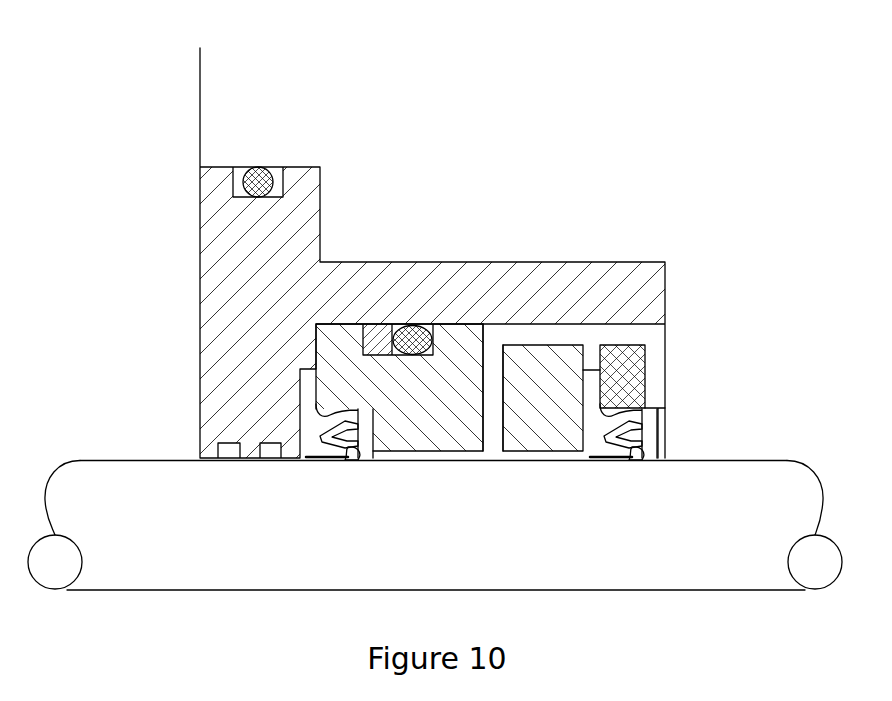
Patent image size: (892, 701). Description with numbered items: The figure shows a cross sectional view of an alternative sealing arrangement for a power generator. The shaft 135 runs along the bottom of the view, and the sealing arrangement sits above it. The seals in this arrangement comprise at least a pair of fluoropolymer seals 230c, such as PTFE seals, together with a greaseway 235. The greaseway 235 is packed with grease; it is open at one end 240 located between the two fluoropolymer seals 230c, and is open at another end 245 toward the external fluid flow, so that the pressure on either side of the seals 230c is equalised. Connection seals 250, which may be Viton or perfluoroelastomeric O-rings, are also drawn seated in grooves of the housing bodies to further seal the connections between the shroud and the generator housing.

The shaft 135 is at (148, 459).
The fluoropolymer seals 230c is at (310, 440).
The greaseway 235 is at (492, 442).
The end 240 is at (490, 440).
The another end 245 is at (650, 336).
The connection seals 250 is at (254, 180).